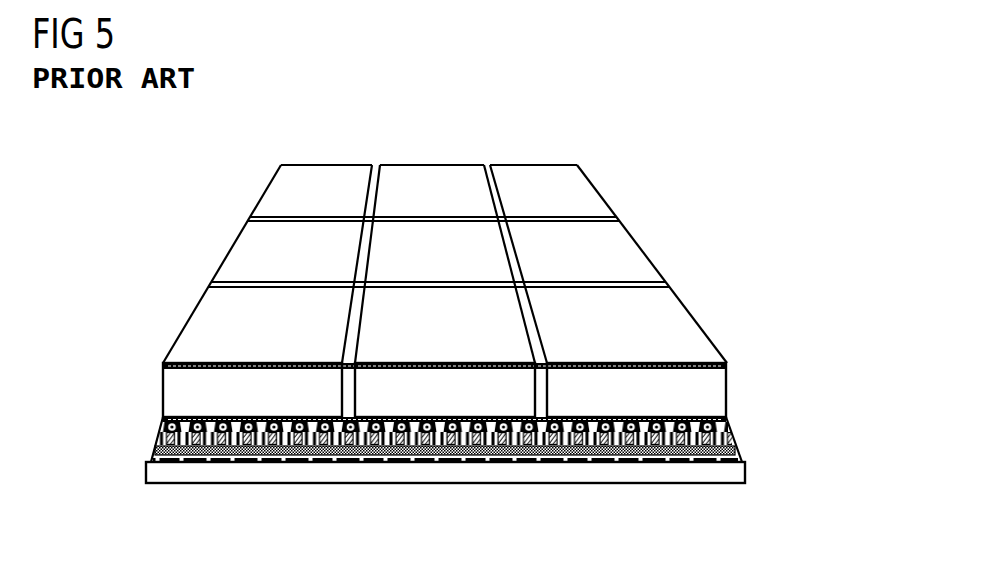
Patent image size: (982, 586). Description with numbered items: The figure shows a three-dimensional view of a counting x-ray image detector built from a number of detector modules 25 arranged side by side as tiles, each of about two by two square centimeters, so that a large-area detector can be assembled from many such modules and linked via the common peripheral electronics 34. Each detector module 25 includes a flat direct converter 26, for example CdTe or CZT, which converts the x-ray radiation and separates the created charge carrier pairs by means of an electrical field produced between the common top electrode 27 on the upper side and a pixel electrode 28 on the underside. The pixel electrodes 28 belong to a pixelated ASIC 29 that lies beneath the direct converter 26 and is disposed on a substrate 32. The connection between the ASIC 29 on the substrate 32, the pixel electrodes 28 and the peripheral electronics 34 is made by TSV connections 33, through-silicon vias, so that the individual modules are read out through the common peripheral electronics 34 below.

The detector module 25 is at (627, 318).
The direct converter 26 is at (728, 378).
The common top electrode 27 is at (162, 362).
The pixel electrode 28 is at (158, 438).
The ASIC 29 is at (735, 438).
The substrate 32 is at (735, 450).
The TSV connection 33 is at (577, 460).
The peripheral electronics 34 is at (732, 475).